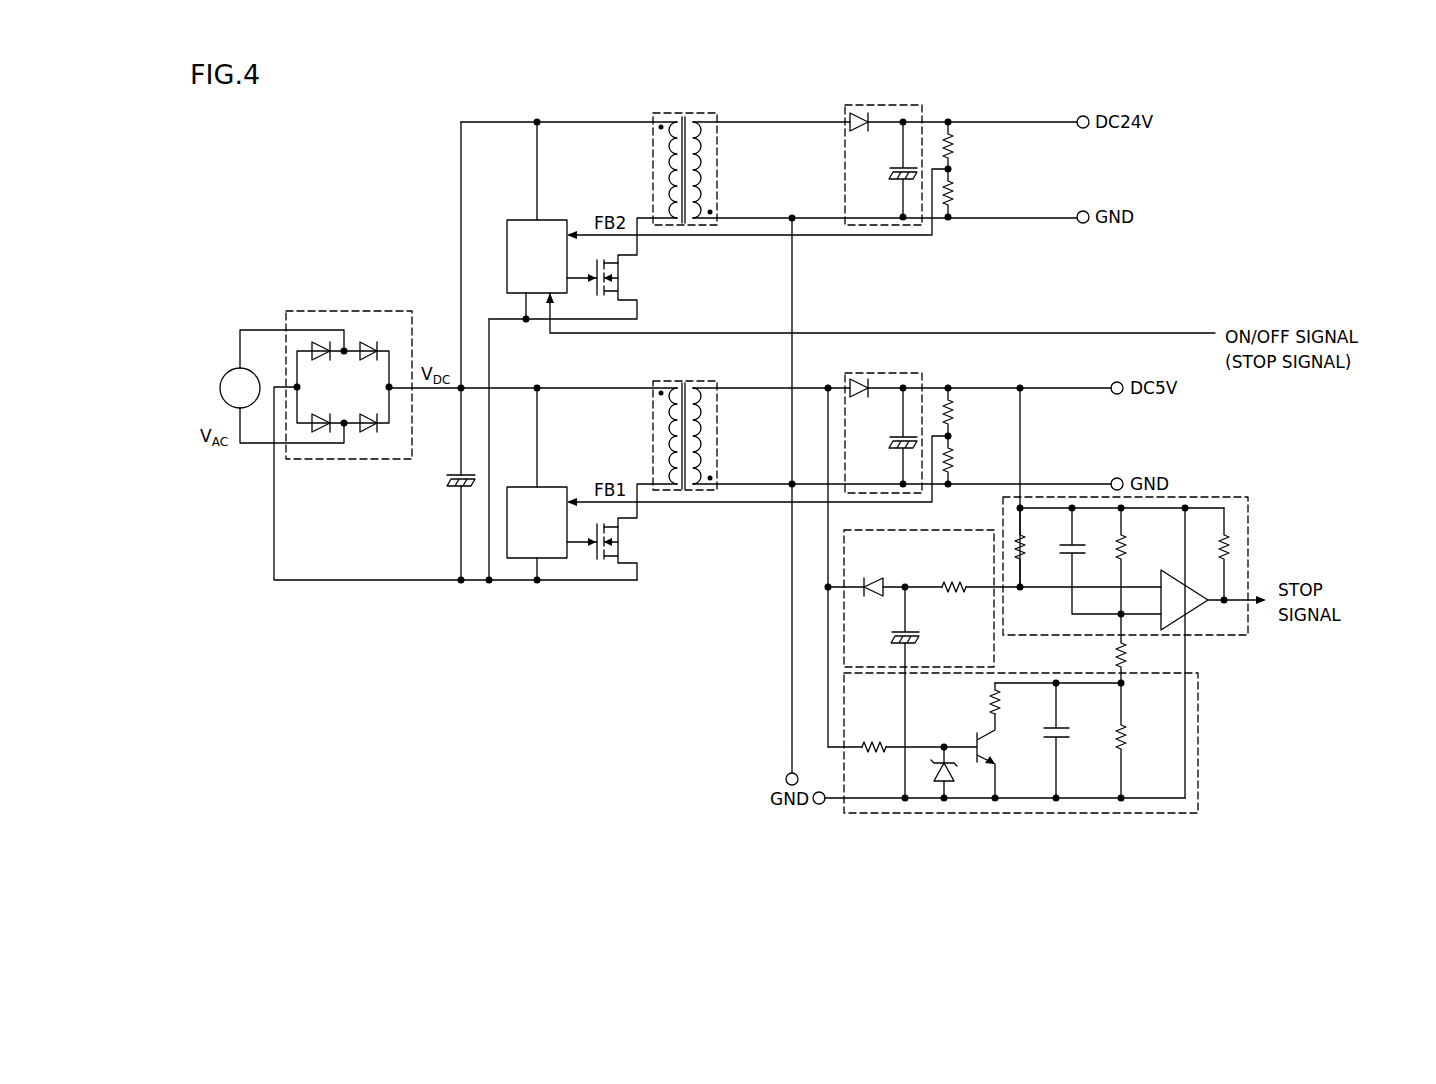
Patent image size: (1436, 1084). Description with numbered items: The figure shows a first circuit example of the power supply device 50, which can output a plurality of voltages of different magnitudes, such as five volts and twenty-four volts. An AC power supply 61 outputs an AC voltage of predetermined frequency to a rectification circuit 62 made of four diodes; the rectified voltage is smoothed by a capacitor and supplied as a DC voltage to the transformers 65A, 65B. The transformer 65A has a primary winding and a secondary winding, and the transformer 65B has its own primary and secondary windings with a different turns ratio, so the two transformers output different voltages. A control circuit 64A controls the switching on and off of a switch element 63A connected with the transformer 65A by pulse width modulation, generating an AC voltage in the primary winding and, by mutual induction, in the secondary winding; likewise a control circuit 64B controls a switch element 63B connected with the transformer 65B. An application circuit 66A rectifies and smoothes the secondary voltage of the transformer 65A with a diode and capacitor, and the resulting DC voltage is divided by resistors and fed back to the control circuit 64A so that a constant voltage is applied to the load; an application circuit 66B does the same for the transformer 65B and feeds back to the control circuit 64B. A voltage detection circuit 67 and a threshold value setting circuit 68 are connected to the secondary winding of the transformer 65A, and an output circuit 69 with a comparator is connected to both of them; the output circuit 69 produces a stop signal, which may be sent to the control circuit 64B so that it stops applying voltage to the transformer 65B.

The power supply device 50 is at (1217, 104).
The AC power supply 61 is at (227, 372).
The rectification circuit 62 is at (349, 374).
The switch element 63A is at (625, 542).
The switch element 63B is at (625, 278).
The control circuit 64A is at (554, 486).
The control circuit 64B is at (554, 219).
The transformer 65A is at (685, 381).
The transformer 65B is at (685, 113).
The application circuit 66A is at (903, 422).
The application circuit 66B is at (903, 154).
The voltage detection circuit 67 is at (911, 588).
The threshold value setting circuit 68 is at (1034, 713).
The output circuit 69 is at (1144, 637).